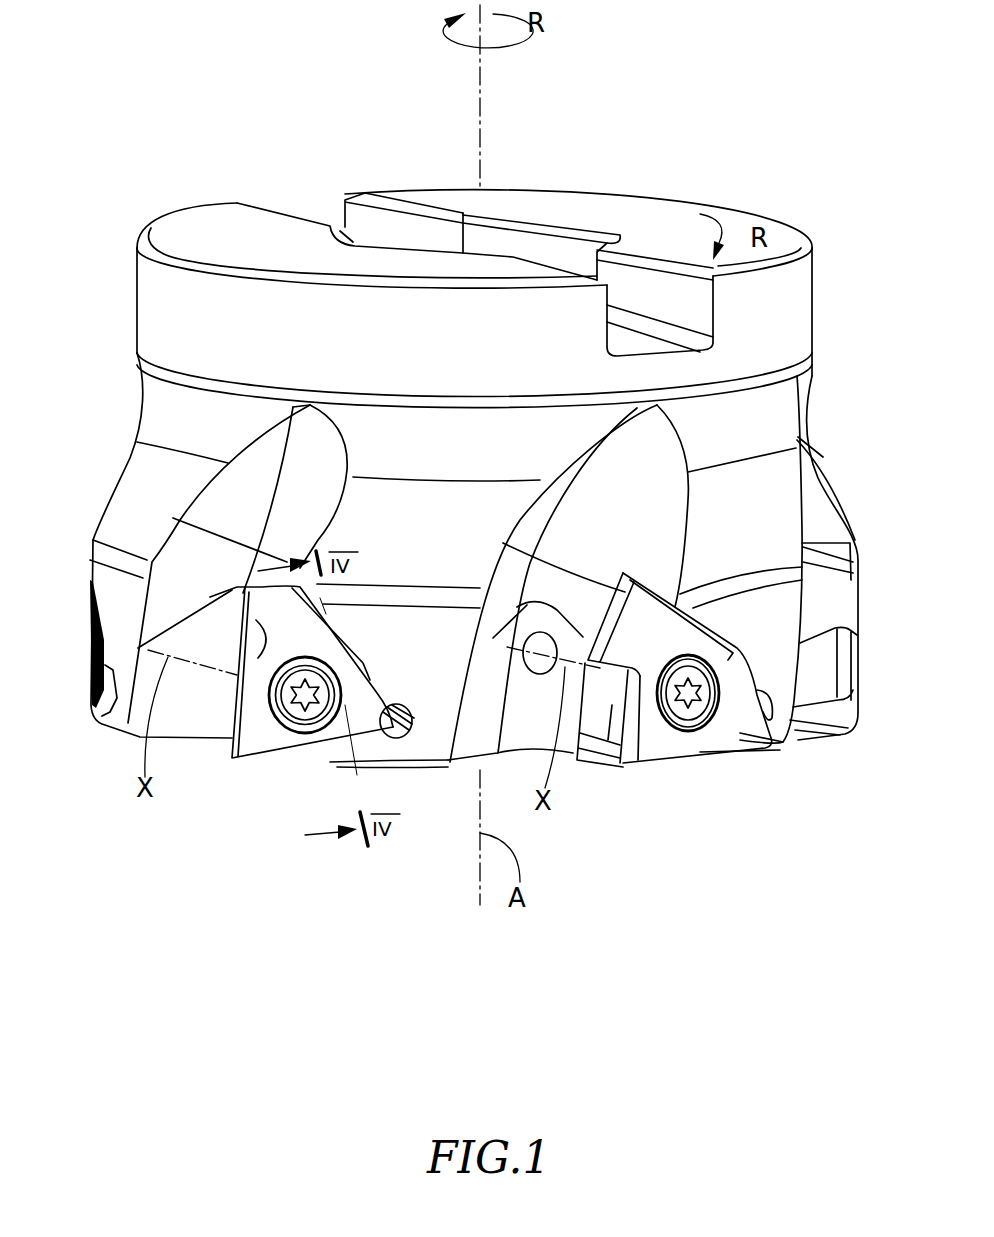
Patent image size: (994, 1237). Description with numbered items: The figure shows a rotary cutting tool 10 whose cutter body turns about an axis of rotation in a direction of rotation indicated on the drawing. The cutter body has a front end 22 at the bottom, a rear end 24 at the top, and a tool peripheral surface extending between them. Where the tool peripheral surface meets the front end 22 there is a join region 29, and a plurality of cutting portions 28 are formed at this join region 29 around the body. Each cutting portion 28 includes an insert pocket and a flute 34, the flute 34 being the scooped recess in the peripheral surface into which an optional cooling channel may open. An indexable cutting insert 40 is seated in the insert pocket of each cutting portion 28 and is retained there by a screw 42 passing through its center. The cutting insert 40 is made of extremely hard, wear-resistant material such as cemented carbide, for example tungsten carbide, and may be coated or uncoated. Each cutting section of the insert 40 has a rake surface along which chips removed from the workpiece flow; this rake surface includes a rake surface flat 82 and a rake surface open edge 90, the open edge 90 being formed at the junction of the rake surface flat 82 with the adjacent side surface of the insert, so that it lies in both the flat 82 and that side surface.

The rotary cutting tool 10 is at (674, 952).
The front end 22 is at (394, 875).
The rear end 24 is at (625, 165).
The cutting portion 28 is at (221, 804).
The join region 29 is at (817, 752).
The flute 34 is at (245, 480).
The indexable cutting insert 40 is at (280, 761).
The screw 42 is at (710, 725).
The rake surface flat 82 is at (597, 765).
The rake surface open edge 90 is at (607, 693).